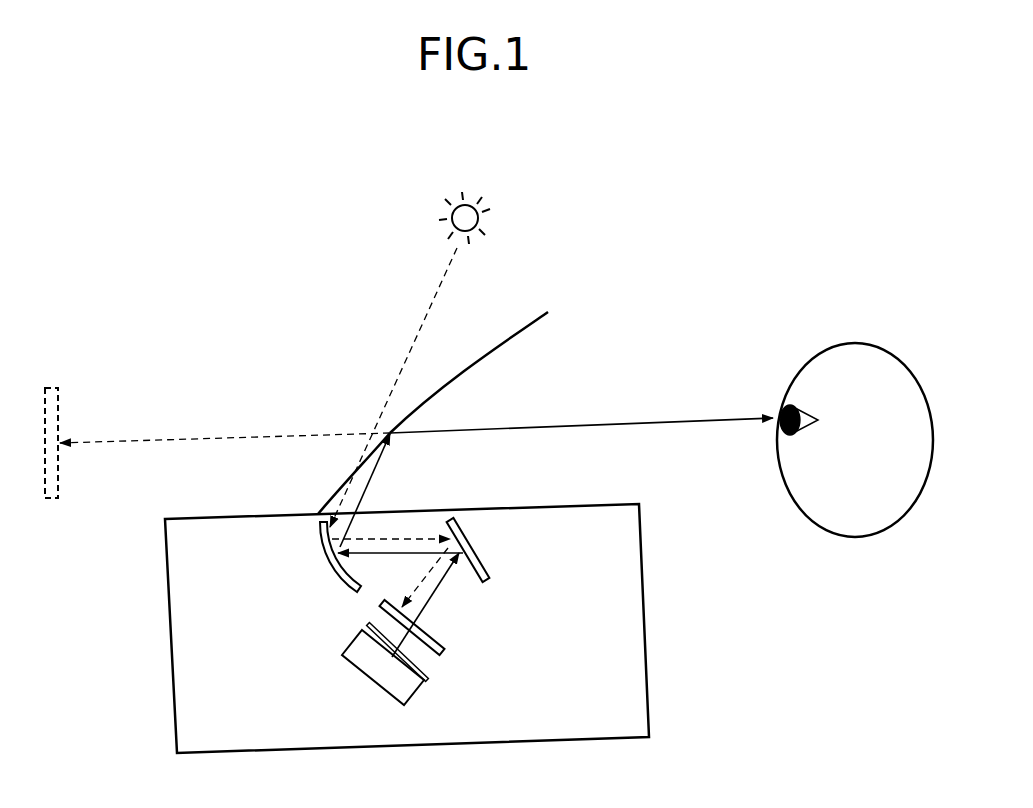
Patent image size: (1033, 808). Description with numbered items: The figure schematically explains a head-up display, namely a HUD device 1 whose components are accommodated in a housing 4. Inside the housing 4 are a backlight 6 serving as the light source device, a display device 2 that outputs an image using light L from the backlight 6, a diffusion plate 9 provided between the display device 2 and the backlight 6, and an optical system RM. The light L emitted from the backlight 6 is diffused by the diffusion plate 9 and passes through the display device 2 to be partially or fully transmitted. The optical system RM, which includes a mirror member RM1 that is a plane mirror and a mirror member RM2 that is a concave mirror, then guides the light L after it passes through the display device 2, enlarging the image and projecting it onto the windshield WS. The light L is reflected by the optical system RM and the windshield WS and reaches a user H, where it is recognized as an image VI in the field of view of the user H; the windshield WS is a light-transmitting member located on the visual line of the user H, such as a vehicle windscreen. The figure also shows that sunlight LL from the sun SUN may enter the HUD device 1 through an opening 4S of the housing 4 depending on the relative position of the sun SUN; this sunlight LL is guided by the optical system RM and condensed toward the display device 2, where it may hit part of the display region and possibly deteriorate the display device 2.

The head-up display device 1 is at (438, 628).
The display device 2 is at (446, 652).
The housing 4 is at (648, 700).
The opening 4S is at (378, 500).
The backlight 6 is at (342, 655).
The diffusion plate 9 is at (428, 681).
The optical system RM is at (398, 572).
The mirror member RM1 is at (478, 551).
The mirror member RM2 is at (322, 562).
The light L is at (606, 425).
The sunlight LL is at (428, 311).
The sun SUN is at (494, 186).
The windshield WS is at (472, 365).
The image VI is at (52, 388).
The user H is at (852, 547).